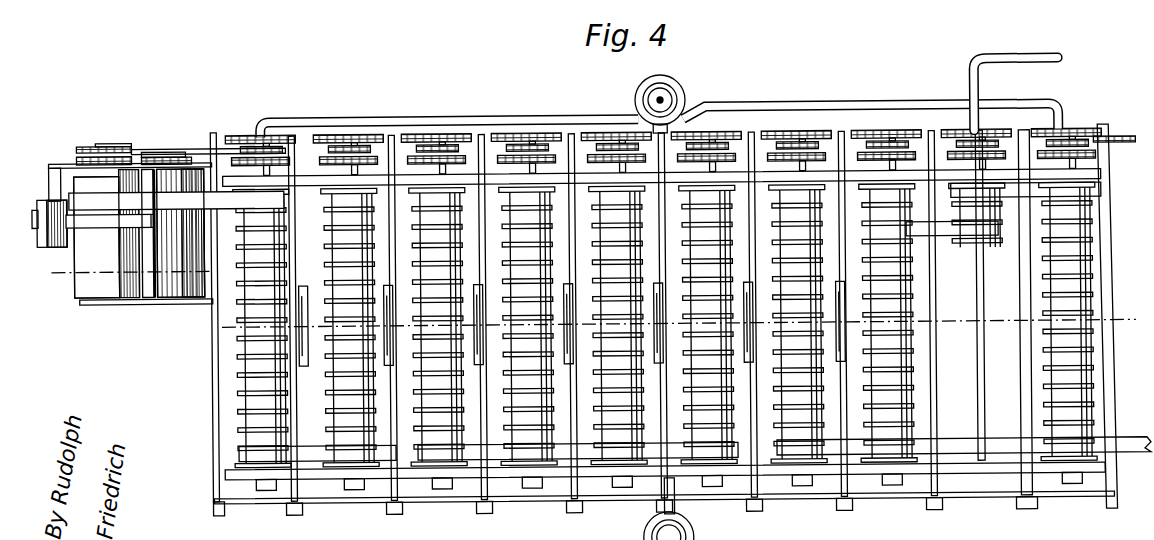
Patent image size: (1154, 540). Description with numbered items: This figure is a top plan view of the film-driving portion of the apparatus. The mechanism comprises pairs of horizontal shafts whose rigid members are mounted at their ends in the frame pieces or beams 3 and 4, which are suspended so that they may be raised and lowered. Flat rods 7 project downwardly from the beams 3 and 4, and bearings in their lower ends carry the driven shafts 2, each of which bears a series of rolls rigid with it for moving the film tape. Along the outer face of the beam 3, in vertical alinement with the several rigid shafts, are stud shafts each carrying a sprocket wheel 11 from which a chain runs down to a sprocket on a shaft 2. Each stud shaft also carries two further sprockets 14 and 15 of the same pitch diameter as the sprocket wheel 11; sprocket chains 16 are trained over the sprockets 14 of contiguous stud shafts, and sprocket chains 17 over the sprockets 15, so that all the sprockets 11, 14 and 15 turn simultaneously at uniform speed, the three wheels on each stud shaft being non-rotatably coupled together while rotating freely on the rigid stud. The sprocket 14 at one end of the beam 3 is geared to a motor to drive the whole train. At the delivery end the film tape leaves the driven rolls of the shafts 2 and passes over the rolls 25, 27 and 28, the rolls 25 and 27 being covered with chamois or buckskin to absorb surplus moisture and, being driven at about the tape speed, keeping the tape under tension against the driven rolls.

The shaft 2 is at (55, 262).
The frame piece 3 is at (1093, 180).
The frame piece 4 is at (1103, 471).
The flat rod 7 is at (900, 531).
The sprocket wheel 11 is at (986, 164).
The sprocket 14 is at (964, 128).
The sprocket 15 is at (980, 131).
The sprocket chain 16 is at (757, 133).
The sprocket chain 17 is at (844, 137).
The roll 25 is at (103, 287).
The roll 27 is at (183, 292).
The roll 28 is at (147, 289).